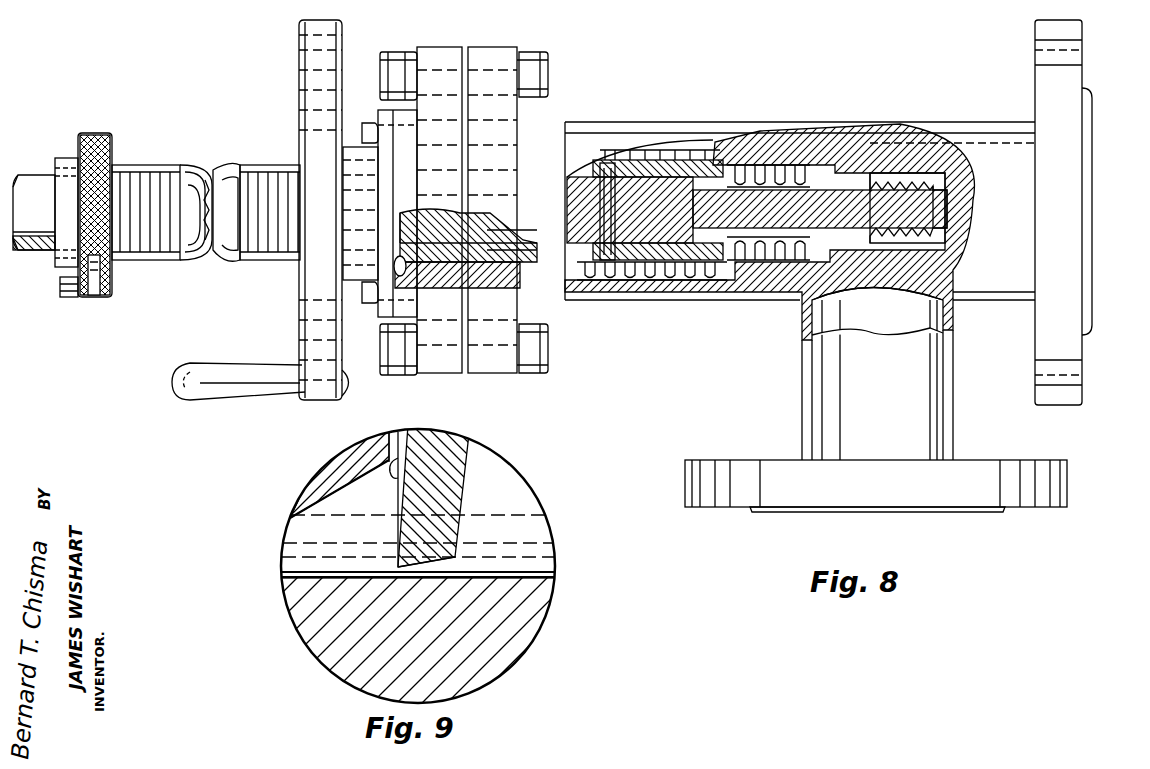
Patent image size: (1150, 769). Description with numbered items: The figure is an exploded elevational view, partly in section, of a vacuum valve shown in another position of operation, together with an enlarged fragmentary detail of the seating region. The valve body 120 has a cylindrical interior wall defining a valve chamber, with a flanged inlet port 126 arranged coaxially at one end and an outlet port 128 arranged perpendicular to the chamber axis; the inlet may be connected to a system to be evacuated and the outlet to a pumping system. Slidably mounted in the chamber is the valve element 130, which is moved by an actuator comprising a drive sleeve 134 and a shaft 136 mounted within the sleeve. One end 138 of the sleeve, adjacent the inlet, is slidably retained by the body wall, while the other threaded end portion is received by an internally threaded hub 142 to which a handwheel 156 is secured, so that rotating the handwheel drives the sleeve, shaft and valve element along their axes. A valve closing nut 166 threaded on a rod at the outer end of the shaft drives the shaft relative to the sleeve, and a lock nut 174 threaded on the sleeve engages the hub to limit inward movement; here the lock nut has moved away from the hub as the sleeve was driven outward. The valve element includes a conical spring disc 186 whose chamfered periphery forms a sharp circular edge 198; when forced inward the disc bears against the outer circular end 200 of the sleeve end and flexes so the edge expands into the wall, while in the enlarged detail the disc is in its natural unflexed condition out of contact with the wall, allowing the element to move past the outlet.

In FIG. 8, the valve closing nut 166 is at (27, 178).
In FIG. 8, the lock nut 174 is at (96, 136).
In FIG. 8, the drive sleeve 134 is at (154, 170).
In FIG. 8, the handwheel 156 is at (300, 156).
In FIG. 8, the internally threaded hub 142 is at (350, 147).
In FIG. 8, the valve element 130 is at (880, 170).
In FIG. 8, the shaft 136 is at (680, 190).
In FIG. 8, the flanged inlet port 126 is at (1085, 118).
In FIG. 8, the outlet port 128 is at (860, 507).
In FIG. 9, the end of the sleeve 138 is at (345, 478).
In FIG. 9, the outer circular end 200 is at (412, 468).
In FIG. 9, the conical spring disc 186 is at (458, 494).
In FIG. 9, the sharp circular edge 198 is at (396, 565).
In FIG. 9, the valve body 120 is at (530, 598).